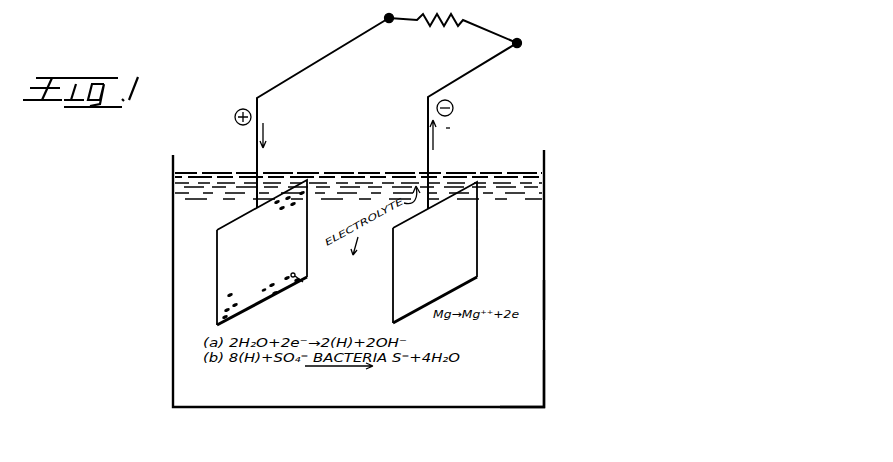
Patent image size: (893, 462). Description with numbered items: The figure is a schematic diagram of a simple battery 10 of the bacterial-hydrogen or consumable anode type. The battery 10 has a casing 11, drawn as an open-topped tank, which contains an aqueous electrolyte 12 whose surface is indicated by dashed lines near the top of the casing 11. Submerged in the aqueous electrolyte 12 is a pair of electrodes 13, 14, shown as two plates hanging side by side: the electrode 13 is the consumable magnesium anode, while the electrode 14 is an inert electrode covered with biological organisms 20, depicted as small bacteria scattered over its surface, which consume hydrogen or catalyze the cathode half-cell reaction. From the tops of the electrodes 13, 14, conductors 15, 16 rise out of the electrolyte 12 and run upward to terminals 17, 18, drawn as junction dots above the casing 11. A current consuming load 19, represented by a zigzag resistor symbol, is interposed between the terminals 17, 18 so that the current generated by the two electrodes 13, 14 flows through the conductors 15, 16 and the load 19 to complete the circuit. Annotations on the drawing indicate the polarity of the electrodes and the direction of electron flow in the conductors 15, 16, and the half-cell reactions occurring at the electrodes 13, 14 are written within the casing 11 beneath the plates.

The battery 10 is at (553, 155).
The casing 11 is at (545, 297).
The aqueous electrolyte 12 is at (528, 367).
The electrode 13 is at (481, 252).
The electrode 14 is at (275, 300).
The conductor 15 is at (430, 162).
The conductor 16 is at (258, 158).
The terminal 17 is at (522, 41).
The terminal 18 is at (384, 18).
The current consuming load 19 is at (465, 26).
The biological organisms 20 is at (308, 276).